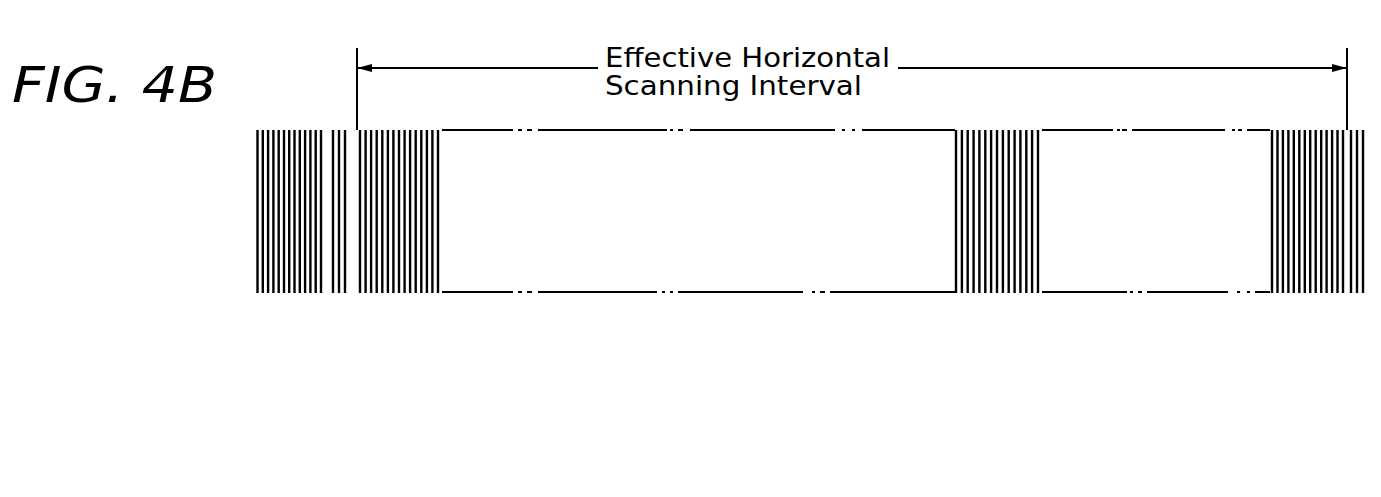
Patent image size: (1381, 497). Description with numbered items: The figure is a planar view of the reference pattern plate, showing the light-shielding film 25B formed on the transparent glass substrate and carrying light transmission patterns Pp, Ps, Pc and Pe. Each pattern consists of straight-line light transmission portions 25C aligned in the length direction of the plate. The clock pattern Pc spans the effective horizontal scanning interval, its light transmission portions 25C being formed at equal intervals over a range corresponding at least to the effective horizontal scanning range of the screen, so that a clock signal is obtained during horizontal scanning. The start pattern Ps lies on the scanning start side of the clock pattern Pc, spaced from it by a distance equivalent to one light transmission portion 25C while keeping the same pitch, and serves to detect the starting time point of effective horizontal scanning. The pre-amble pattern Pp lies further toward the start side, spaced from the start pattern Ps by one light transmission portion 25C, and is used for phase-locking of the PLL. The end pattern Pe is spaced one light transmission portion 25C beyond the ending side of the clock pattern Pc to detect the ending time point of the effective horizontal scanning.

The light-shielding film 25B is at (245, 222).
The light transmission portions 25C is at (1032, 184).
The pre-amble pattern Pp is at (323, 297).
The start pattern Ps is at (343, 295).
The clock pattern Pc is at (849, 214).
The end pattern Pe is at (1358, 295).